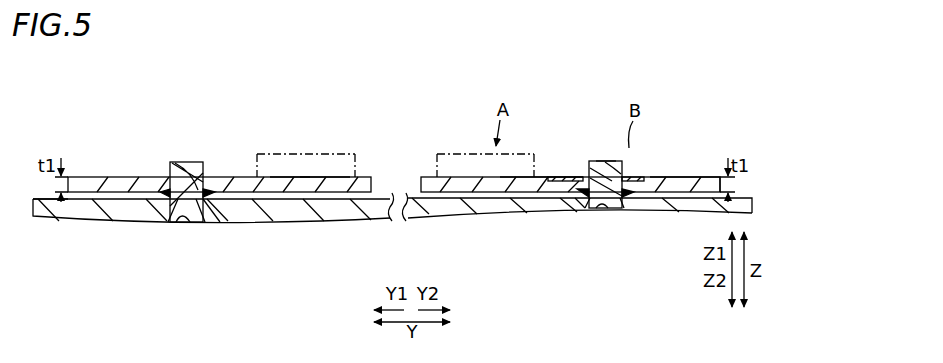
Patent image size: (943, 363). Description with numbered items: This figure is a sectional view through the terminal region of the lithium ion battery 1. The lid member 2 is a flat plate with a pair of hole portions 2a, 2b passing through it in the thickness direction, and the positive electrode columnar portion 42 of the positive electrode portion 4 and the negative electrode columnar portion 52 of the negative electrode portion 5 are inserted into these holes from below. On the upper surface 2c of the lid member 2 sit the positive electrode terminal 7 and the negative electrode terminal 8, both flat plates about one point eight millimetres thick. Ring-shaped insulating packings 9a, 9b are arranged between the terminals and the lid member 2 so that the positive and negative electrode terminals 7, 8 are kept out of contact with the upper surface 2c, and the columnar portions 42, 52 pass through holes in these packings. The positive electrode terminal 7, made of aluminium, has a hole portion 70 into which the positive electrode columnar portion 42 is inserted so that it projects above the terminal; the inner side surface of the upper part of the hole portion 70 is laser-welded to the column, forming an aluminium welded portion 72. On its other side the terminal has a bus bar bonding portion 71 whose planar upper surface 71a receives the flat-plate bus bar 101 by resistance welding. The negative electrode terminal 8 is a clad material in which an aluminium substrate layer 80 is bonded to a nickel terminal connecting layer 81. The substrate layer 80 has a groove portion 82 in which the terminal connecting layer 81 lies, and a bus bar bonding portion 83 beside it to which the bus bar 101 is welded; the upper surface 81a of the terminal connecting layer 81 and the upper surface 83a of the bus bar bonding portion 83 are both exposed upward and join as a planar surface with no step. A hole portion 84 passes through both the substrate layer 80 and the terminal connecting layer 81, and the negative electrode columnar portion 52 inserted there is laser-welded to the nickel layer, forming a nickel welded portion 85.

The lithium ion battery 1 is at (736, 110).
The lid member 2 is at (124, 222).
The hole portion 2a is at (188, 218).
The hole portion 2b is at (603, 210).
The upper surface 2c is at (98, 192).
The positive electrode portion 4 is at (202, 260).
The positive electrode columnar portion 42 is at (191, 224).
The negative electrode portion 5 is at (623, 259).
The negative electrode columnar portion 52 is at (615, 212).
The positive electrode terminal 7 is at (367, 167).
The negative electrode terminal 8 is at (692, 166).
The packing 9a is at (218, 224).
The packing 9b is at (578, 214).
The hole portion 70 is at (186, 162).
The bus bar bonding portion 71 is at (323, 173).
The upper surface 71a is at (288, 177).
The welded portion 72 is at (168, 178).
The substrate layer 80 is at (682, 186).
The terminal connecting layer 81 is at (563, 177).
The upper surface 81a is at (552, 177).
The groove portion 82 is at (642, 185).
The bus bar bonding portion 83 is at (518, 173).
The upper surface 83a is at (478, 177).
The hole portion 84 is at (603, 182).
The welded portion 85 is at (601, 163).
The bus bar 101 is at (258, 154).